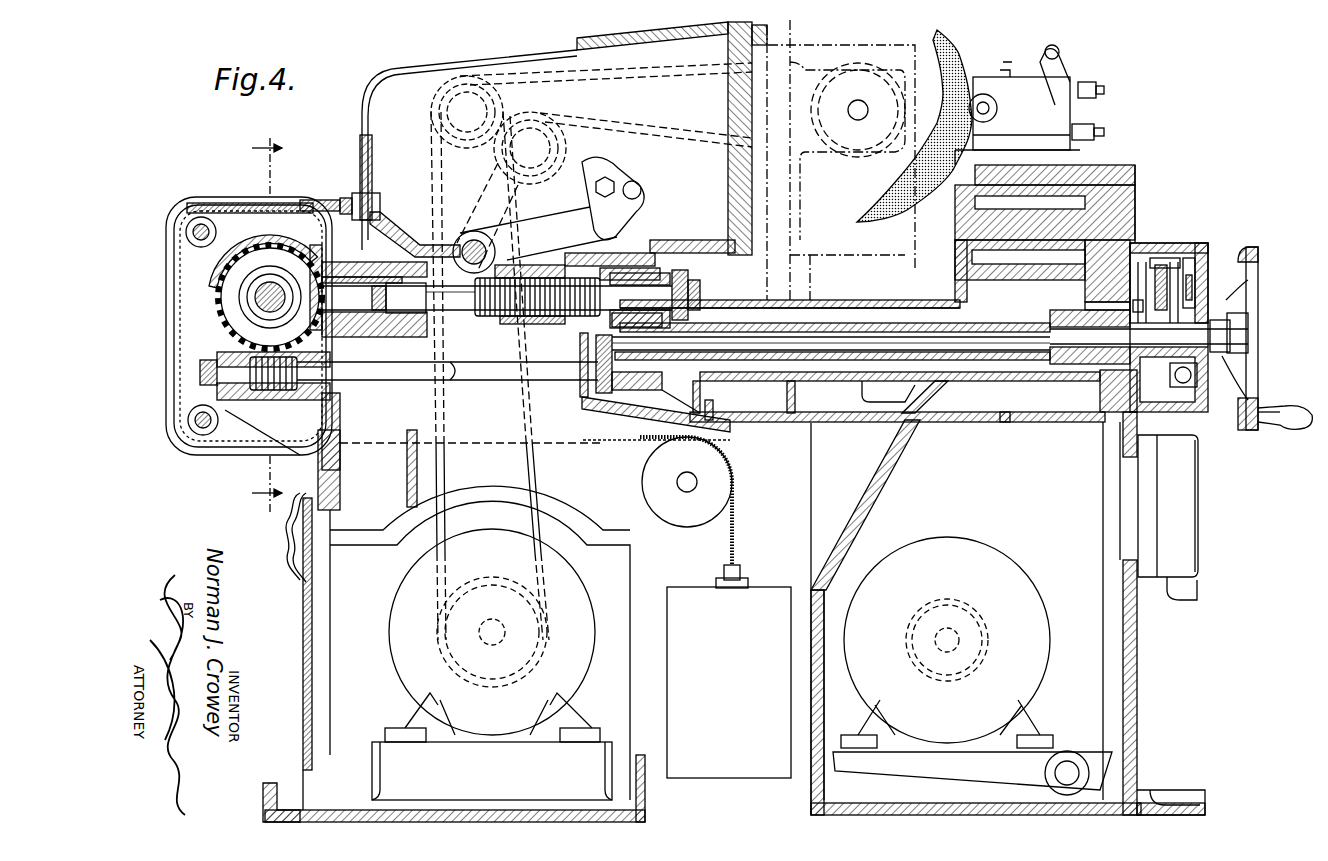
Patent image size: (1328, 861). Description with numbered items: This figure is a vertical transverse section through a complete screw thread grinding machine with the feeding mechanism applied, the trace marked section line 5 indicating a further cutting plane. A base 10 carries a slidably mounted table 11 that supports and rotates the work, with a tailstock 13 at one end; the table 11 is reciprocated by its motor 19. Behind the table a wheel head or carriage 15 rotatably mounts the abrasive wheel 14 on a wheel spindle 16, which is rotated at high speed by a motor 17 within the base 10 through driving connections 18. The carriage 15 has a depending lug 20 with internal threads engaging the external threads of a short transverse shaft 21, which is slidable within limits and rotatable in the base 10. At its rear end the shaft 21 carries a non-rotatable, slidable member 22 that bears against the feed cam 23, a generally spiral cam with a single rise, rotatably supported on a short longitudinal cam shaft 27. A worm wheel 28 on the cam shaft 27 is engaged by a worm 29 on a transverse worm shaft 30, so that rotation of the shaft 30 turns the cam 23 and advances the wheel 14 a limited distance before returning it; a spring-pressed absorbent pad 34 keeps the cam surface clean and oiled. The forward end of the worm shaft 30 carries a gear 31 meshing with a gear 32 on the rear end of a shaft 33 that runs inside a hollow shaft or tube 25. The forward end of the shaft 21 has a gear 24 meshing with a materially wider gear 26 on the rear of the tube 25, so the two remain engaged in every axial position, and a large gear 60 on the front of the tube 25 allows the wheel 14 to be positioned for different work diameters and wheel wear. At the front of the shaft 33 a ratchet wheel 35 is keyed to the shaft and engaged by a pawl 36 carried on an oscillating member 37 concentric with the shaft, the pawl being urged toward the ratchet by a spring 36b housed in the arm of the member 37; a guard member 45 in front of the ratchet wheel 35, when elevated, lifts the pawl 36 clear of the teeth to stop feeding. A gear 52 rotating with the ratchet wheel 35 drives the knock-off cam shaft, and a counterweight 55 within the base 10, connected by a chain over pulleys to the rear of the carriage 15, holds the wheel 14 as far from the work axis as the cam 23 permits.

The section line 5- 5 is at (267, 315).
The base 10 is at (325, 507).
The table 11 is at (1110, 215).
The tailstock 13 is at (1045, 122).
The abrasive wheel 14 is at (950, 58).
The wheel head or carriage 15 is at (740, 205).
The wheel spindle 16 is at (858, 104).
The motor 17 is at (570, 595).
The driving connections 18 is at (524, 468).
The motor 19 is at (1000, 570).
The depending lug 20 is at (540, 318).
The short shaft 21 is at (455, 316).
The member 22 is at (340, 268).
The feed cam 23 is at (262, 285).
The gear 24 is at (690, 272).
The hollow shaft or tube 25 is at (985, 352).
The gear 26 is at (673, 372).
The cam shaft 27 is at (275, 286).
The worm wheel 28 is at (236, 284).
The worm 29 is at (282, 385).
The worm shaft 30 is at (372, 381).
The gear 31 is at (600, 395).
The gear 32 is at (623, 277).
The shaft 33 is at (835, 340).
The soft absorbent pad 34 is at (215, 355).
The ratchet wheel 35 is at (1180, 412).
The pawl 36 is at (1143, 280).
The spring 36b is at (1195, 295).
The oscillating member 37 is at (1218, 375).
The guard member 45 is at (1238, 290).
The gear 52 is at (1092, 300).
The counterweight 55 is at (733, 605).
The large gear 60 is at (1103, 420).